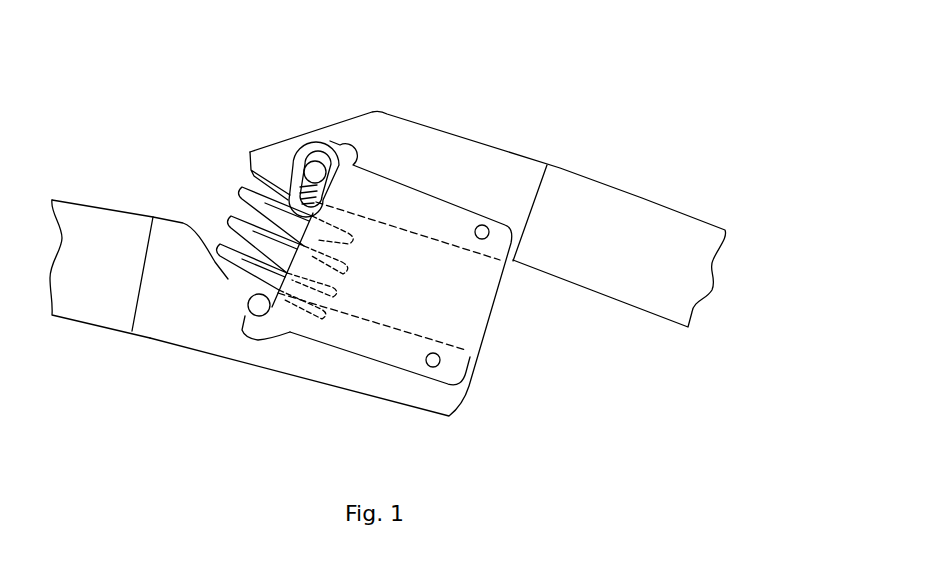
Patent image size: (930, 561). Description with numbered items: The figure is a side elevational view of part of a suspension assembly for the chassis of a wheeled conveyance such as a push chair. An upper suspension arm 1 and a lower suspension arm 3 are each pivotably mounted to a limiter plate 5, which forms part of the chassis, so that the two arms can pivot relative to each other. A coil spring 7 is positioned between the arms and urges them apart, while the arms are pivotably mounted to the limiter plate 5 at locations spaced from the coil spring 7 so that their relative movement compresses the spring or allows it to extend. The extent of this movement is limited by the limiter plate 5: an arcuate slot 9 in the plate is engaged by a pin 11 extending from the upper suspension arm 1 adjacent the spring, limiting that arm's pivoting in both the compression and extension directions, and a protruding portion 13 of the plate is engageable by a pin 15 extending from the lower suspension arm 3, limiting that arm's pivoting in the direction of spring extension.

The upper suspension arm 1 is at (610, 188).
The lower suspension arm 3 is at (93, 326).
The limiter plate 5 is at (497, 291).
The coil spring 7 is at (236, 186).
The arcuate slot 9 is at (305, 208).
The pin 11 is at (315, 170).
The protruding portion 13 is at (243, 320).
The pin 15 is at (259, 305).